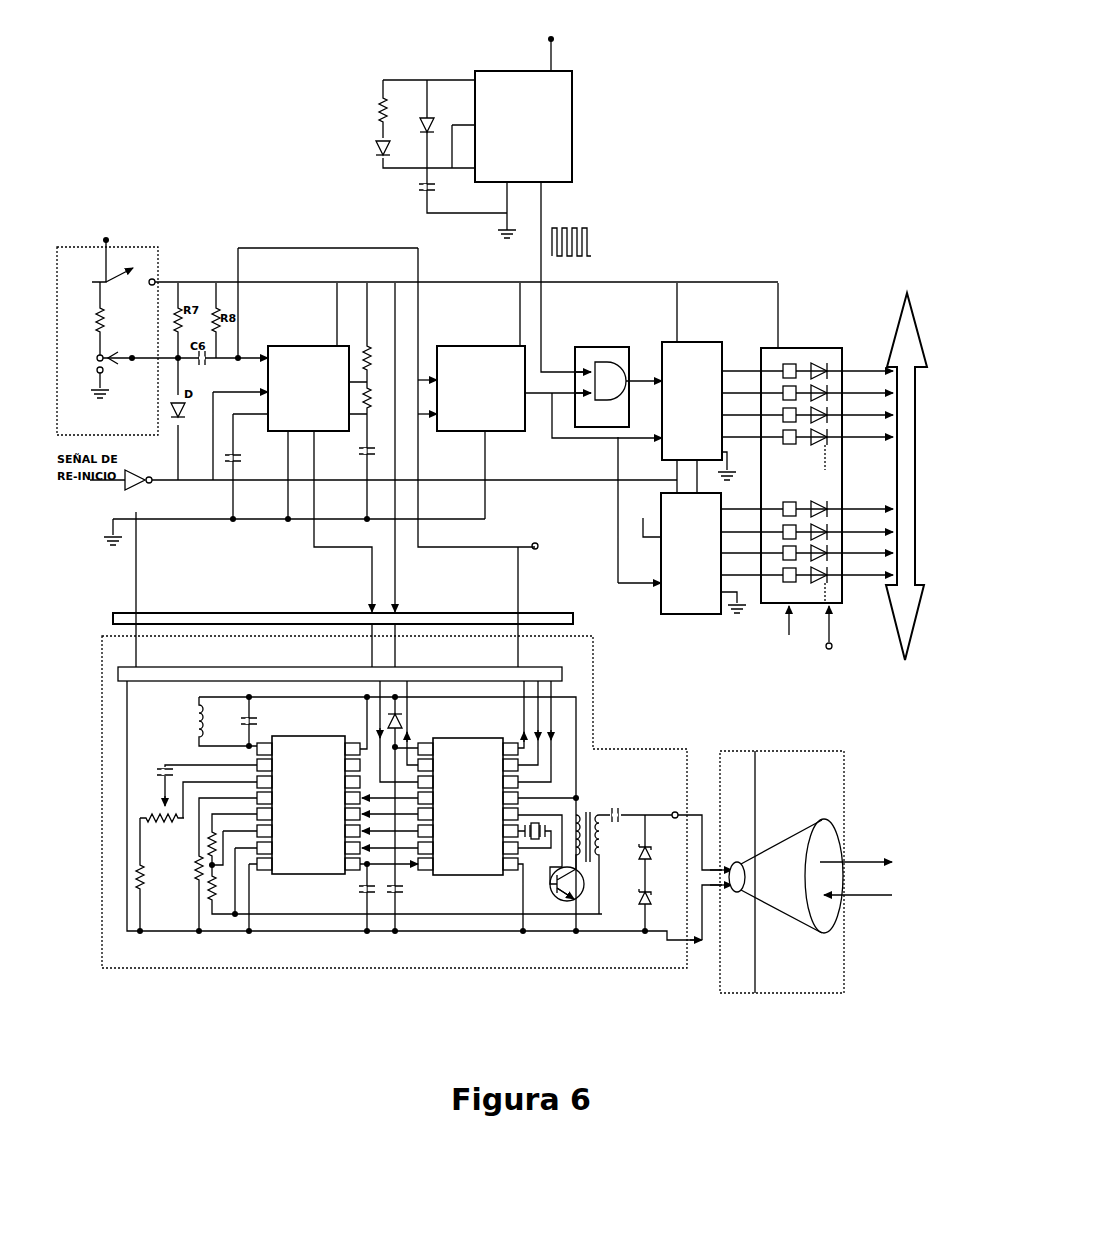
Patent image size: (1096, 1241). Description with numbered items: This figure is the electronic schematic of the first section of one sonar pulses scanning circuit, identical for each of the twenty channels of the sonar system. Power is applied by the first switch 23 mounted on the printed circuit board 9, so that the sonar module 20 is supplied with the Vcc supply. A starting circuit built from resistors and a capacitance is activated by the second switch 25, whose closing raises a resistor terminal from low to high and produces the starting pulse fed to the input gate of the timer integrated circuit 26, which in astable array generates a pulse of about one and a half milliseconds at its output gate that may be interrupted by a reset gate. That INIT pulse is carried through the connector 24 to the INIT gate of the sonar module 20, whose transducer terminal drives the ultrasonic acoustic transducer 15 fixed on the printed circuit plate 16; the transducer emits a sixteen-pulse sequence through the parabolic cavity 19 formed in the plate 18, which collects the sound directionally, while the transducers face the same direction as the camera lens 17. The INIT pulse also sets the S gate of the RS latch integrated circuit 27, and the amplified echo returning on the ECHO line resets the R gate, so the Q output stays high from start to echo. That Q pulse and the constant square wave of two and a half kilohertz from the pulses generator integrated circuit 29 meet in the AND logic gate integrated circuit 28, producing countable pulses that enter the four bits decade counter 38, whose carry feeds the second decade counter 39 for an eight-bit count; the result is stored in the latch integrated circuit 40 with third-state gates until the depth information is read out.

The printed circuit board 9 is at (70, 252).
The switch INT-1 23 is at (135, 252).
The switch INT-2 25 is at (133, 388).
The connector 24 is at (118, 610).
The sonar module 20 is at (312, 965).
The lens 17 is at (308, 795).
The ultrasonic acoustic transducer 15 is at (742, 895).
The printed circuit plate 16 is at (718, 955).
The plate 18 is at (806, 988).
The parabolic cavity 19 is at (828, 914).
The timer integrated circuit 26 is at (305, 447).
The RS latch integrated circuit 27 is at (540, 457).
The AND logic gate integrated circuit 28 is at (618, 375).
The pulses generator integrated circuit 29 is at (470, 195).
The four bits decade counter 38 is at (777, 388).
The second decade counter 39 is at (755, 541).
The latch integrated circuit 40 is at (819, 476).